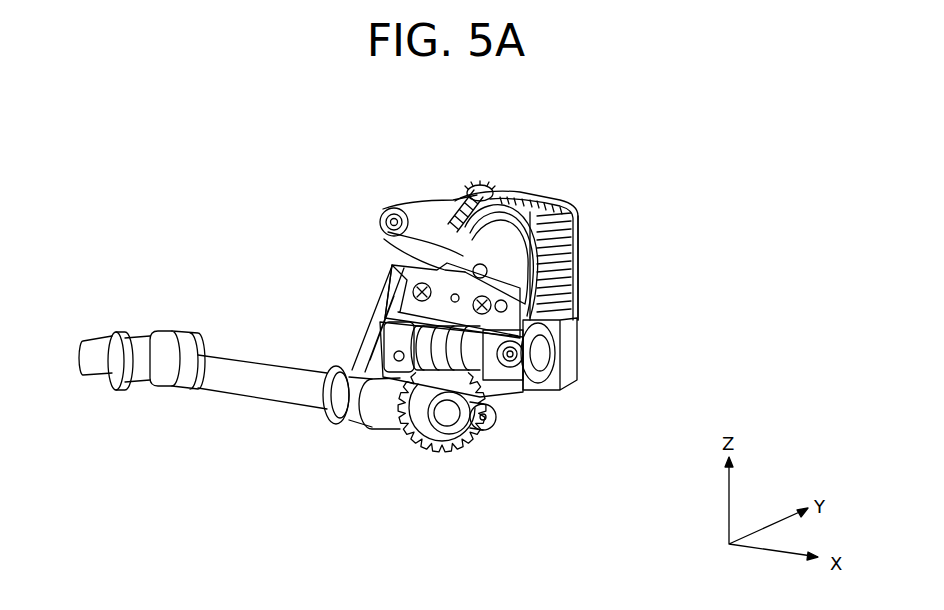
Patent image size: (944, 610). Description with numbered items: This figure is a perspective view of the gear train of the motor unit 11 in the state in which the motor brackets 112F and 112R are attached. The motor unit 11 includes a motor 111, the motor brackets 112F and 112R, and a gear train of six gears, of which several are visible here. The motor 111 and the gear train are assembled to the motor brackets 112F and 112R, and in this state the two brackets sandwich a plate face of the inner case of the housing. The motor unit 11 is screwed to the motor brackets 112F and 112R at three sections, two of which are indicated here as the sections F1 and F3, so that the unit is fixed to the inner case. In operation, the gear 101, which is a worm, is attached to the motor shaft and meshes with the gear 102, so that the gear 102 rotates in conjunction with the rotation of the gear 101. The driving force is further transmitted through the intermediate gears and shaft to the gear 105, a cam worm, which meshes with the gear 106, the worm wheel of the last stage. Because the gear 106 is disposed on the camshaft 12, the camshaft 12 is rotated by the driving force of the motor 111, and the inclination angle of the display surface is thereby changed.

The motor unit 11 is at (593, 231).
The camshaft 12 is at (247, 389).
The gear (worm) 101 is at (492, 184).
The gear 102 is at (567, 250).
The gear (cam worm) 105 is at (491, 390).
The gear (worm wheel) 106 is at (422, 448).
The motor 111 is at (380, 320).
The motor bracket 112F is at (520, 313).
The motor bracket 112R is at (569, 352).
The section F1 is at (518, 360).
The section F3 is at (385, 220).